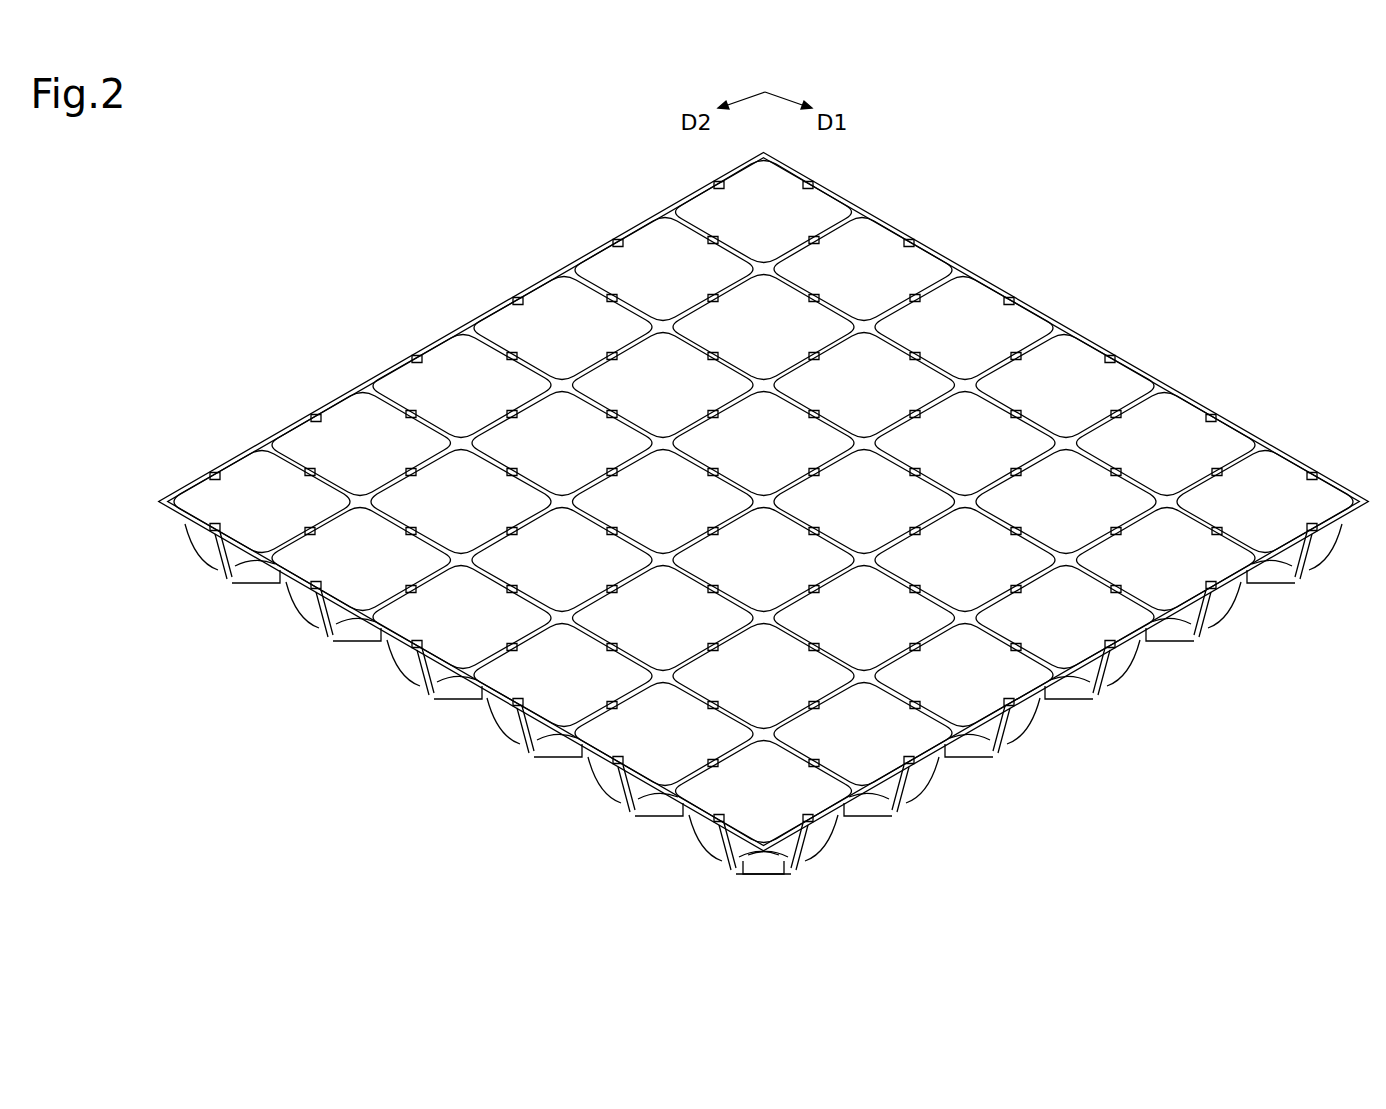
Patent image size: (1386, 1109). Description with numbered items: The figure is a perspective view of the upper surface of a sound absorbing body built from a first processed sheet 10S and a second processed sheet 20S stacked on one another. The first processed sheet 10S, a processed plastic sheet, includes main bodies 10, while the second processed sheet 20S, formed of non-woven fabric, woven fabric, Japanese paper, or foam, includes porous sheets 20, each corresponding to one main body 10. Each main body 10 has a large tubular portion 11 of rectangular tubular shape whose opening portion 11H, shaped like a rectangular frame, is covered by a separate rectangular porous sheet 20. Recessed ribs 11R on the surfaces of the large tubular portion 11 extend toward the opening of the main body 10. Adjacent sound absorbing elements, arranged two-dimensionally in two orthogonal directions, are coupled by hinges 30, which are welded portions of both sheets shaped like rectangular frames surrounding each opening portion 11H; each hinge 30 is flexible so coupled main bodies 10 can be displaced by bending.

The main body 10 is at (754, 705).
The large tubular portion 11 is at (185, 542).
The rib 11R is at (219, 574).
The opening portion 11H is at (1157, 585).
The first processed sheet 10S is at (1176, 728).
The porous sheet 20 is at (1292, 475).
The second processed sheet 20S is at (1334, 418).
The hinge 30 is at (1060, 324).